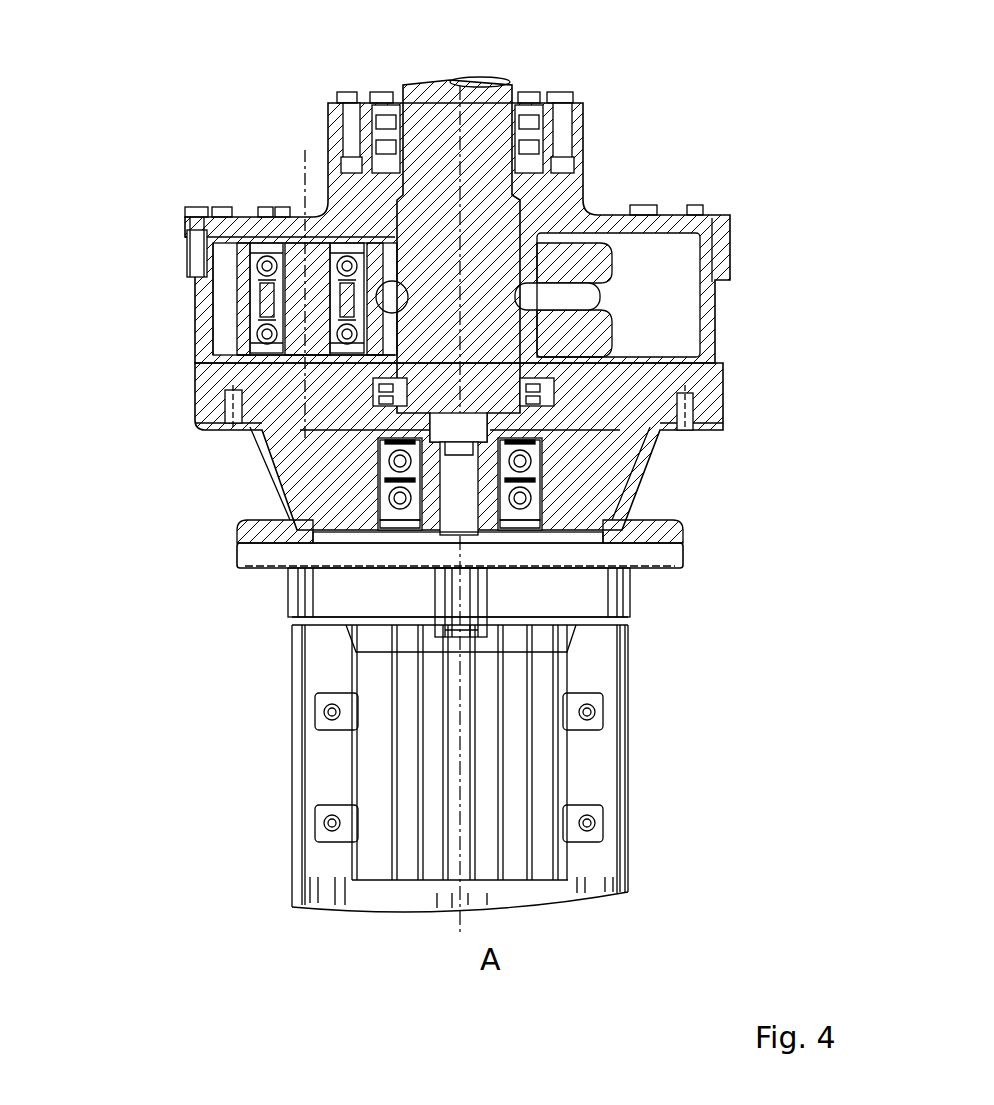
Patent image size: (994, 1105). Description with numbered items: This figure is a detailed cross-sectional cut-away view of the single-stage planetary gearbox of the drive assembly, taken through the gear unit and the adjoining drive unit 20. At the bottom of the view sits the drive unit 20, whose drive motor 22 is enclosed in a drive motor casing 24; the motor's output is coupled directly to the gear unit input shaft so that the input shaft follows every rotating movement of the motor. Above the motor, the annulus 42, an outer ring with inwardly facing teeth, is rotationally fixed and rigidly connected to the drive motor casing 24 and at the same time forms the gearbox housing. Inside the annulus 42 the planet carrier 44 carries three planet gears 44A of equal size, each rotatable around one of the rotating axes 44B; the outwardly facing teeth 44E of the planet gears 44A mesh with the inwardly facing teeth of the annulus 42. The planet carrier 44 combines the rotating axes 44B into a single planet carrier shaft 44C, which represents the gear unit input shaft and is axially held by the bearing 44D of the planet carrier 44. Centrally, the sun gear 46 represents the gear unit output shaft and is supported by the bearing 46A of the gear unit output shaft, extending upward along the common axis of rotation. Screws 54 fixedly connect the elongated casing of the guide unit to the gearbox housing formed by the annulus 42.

The drive unit 20 is at (213, 774).
The drive motor 22 is at (403, 830).
The drive motor casing 24 is at (632, 832).
The annulus 42 is at (205, 402).
The planet carrier 44 is at (358, 396).
The planet gear 44A is at (247, 290).
The rotating axes of planet gears 44B is at (303, 210).
The planet carrier shaft 44C is at (430, 512).
The bearing of planet carrier 44D is at (380, 468).
The teeth 44E is at (380, 328).
The sun gear 46 is at (482, 138).
The bearing of gear unit output shaft 46A is at (530, 387).
The screws 54 is at (193, 207).